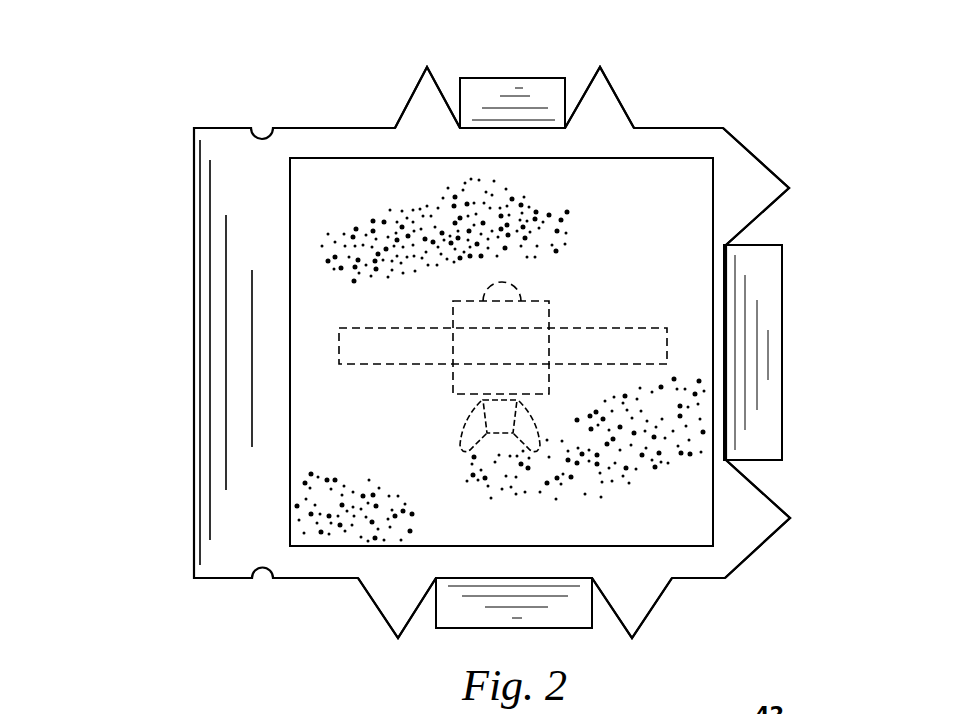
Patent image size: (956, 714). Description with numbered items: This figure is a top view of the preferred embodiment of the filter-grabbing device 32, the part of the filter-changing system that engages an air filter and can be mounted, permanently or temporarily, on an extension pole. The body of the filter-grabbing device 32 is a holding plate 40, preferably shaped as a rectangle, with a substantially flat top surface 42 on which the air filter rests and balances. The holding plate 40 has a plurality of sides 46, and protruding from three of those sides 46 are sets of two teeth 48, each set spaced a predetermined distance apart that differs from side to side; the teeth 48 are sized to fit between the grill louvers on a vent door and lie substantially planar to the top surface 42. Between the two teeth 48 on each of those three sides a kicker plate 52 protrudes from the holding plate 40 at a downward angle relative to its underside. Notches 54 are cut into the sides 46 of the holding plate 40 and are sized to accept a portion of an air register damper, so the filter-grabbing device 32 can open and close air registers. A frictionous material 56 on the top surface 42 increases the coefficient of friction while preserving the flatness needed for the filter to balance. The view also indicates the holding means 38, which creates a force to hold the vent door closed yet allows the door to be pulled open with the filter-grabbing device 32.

The filter-grabbing device 32 is at (148, 165).
The holding means 38 is at (428, 398).
The holding plate 40 is at (335, 137).
The top surface 42 is at (688, 150).
The sides 46 is at (357, 95).
The teeth 48 is at (416, 84).
The kicker plates 52 is at (495, 95).
The notches 54 is at (264, 134).
The frictionous material 56 is at (632, 294).